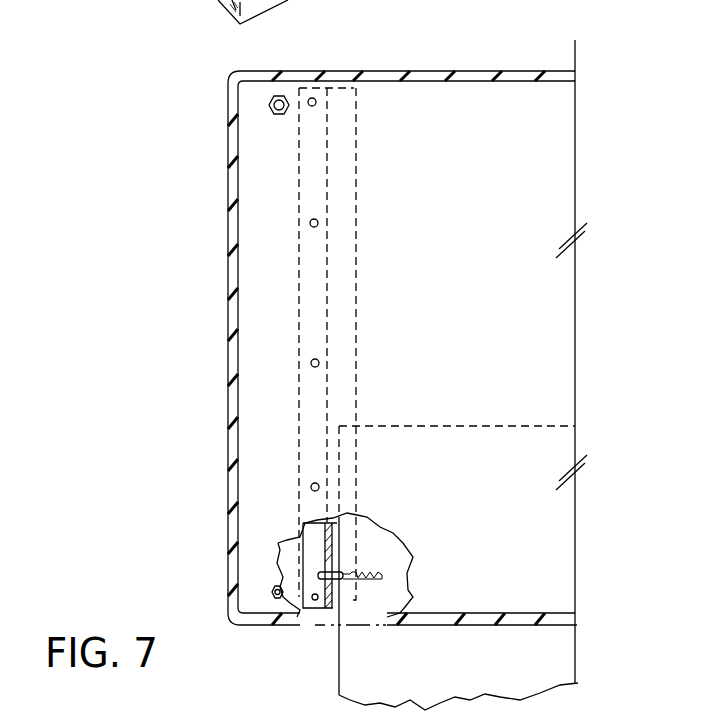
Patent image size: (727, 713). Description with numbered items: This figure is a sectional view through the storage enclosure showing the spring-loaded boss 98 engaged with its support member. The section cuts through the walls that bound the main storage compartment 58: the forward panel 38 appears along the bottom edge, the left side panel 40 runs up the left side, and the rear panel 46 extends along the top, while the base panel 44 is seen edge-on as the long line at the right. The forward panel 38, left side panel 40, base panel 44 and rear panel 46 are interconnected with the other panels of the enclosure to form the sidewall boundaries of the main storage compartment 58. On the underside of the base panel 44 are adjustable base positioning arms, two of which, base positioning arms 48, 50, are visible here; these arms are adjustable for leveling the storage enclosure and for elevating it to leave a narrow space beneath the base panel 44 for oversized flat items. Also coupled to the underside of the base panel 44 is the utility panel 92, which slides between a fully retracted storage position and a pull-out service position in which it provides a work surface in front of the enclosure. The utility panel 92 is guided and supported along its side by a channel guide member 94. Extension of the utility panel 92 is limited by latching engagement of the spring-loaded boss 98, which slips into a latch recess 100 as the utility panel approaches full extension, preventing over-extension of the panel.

The forward panel 38 is at (499, 625).
The left side panel 40 is at (228, 225).
The base panel 44 is at (548, 137).
The rear panel 46 is at (427, 70).
The base positioning arm 48 is at (268, 594).
The base positioning arm 50 is at (272, 111).
The main storage compartment 58 is at (488, 268).
The utility panel 92 is at (338, 660).
The channel guide member 94 is at (318, 539).
The spring-loaded boss 98 is at (345, 572).
The latch recess 100 is at (300, 605).